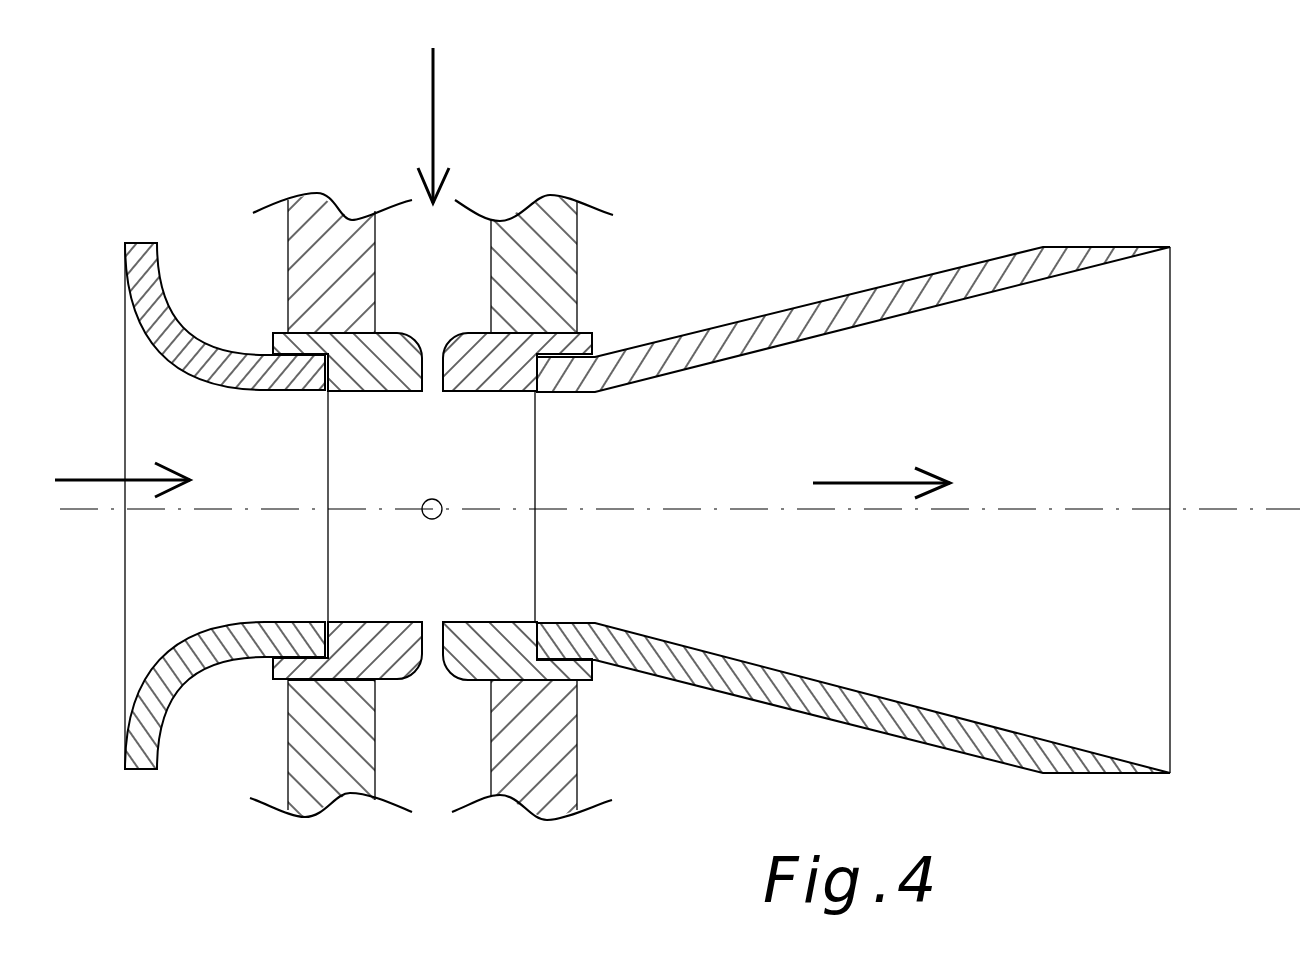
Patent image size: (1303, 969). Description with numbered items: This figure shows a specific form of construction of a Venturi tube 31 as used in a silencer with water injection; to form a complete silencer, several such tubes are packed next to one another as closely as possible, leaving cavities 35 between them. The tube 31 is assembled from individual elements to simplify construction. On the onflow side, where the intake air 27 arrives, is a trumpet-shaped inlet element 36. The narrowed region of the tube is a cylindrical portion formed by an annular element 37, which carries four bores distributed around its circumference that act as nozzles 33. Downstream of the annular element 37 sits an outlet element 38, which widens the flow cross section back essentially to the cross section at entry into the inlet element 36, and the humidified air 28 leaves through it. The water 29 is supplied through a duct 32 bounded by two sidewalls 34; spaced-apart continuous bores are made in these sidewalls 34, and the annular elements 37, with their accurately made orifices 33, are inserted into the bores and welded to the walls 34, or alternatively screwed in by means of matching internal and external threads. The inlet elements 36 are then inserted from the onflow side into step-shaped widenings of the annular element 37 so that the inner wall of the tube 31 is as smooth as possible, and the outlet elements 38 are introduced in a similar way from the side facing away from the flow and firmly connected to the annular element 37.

The intake air upstream of the fogging grid 27 is at (105, 478).
The humidified air downstream of the fogging grid 28 is at (878, 483).
The water supplied 29 is at (436, 120).
The Venturi tube 31 is at (1038, 424).
The duct for water 32 is at (401, 784).
The nozzles 33 is at (431, 620).
The sidewalls of the water duct 34 is at (300, 277).
The cavities between Venturi tubes 35 is at (853, 509).
The inlet element 36 is at (150, 727).
The annular element 37 is at (580, 345).
The outlet element 38 is at (900, 305).